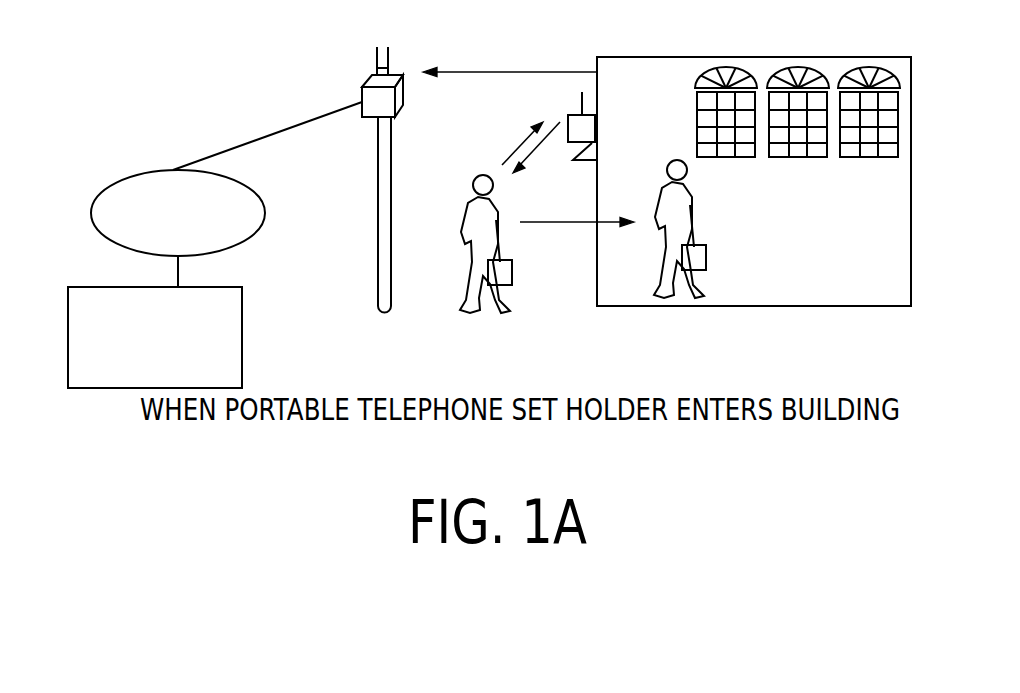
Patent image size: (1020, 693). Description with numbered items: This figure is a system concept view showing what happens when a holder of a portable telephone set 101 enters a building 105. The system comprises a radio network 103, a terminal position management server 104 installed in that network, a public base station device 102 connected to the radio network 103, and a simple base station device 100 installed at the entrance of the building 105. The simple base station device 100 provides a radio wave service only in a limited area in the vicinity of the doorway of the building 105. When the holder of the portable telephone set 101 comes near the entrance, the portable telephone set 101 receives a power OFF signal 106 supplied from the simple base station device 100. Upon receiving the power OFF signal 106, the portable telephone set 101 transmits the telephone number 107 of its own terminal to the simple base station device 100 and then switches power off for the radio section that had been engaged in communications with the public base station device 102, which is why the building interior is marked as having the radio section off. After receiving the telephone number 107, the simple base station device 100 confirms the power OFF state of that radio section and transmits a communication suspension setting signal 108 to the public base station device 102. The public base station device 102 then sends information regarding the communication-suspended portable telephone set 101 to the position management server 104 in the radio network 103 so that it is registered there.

The simple base station device 100 is at (592, 113).
The portable telephone set 101 is at (458, 233).
The public base station device 102 is at (403, 82).
The radio network 103 is at (142, 172).
The terminal position management server 104 is at (242, 308).
The building 105 is at (762, 290).
The power OFF signal 106 is at (543, 148).
The telephone number 107 is at (523, 142).
The communication suspension setting signal 108 is at (500, 72).